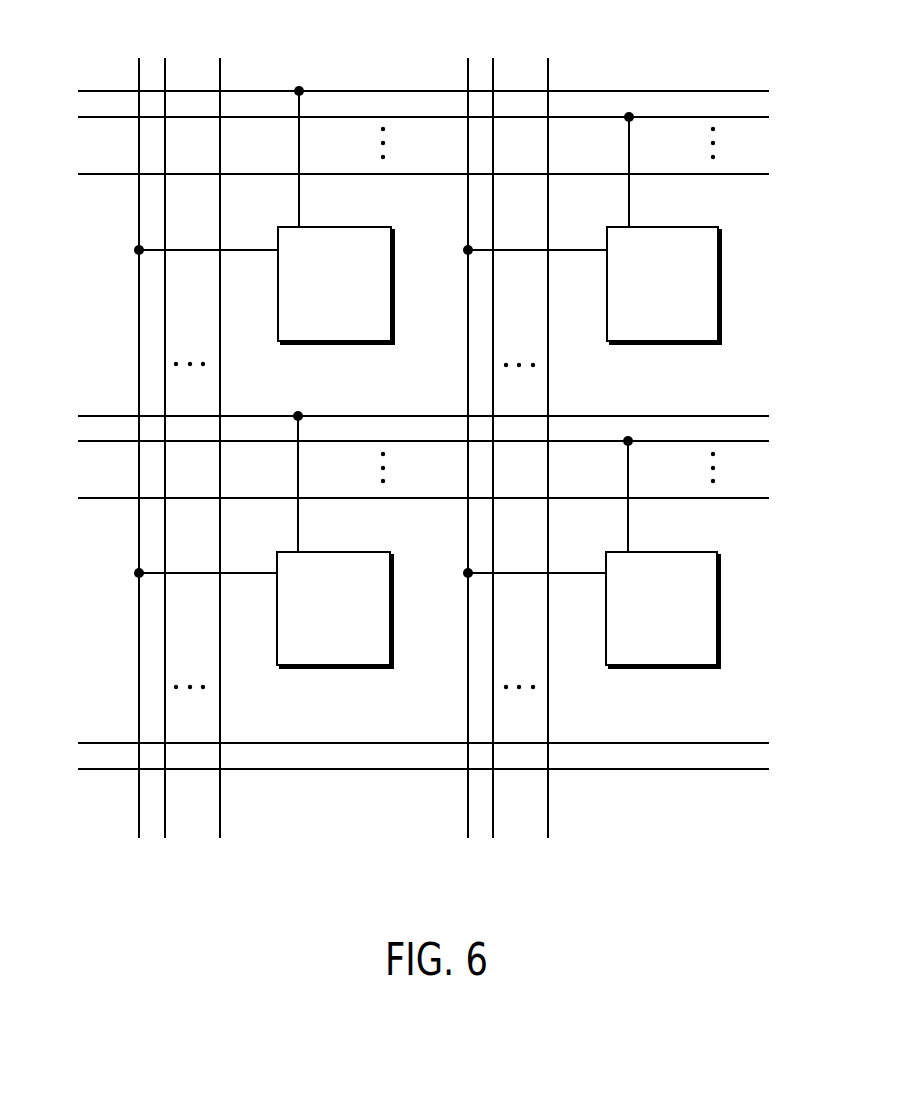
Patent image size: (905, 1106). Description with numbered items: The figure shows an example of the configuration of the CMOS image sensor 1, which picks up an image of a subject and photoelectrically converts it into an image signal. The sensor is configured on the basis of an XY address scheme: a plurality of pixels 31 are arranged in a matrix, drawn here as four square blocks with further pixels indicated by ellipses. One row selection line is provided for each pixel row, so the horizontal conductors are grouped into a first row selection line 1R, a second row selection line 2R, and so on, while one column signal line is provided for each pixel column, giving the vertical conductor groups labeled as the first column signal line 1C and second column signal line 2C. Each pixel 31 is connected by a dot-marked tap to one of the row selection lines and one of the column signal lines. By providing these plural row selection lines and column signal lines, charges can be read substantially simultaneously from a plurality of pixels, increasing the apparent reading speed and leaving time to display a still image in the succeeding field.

The CMOS image sensor 1 is at (98, 647).
The pixel 31 is at (348, 345).
The row selection line 1R is at (780, 73).
The row selection line 2R is at (780, 402).
The column signal line 1C is at (232, 853).
The column signal line 2C is at (567, 853).